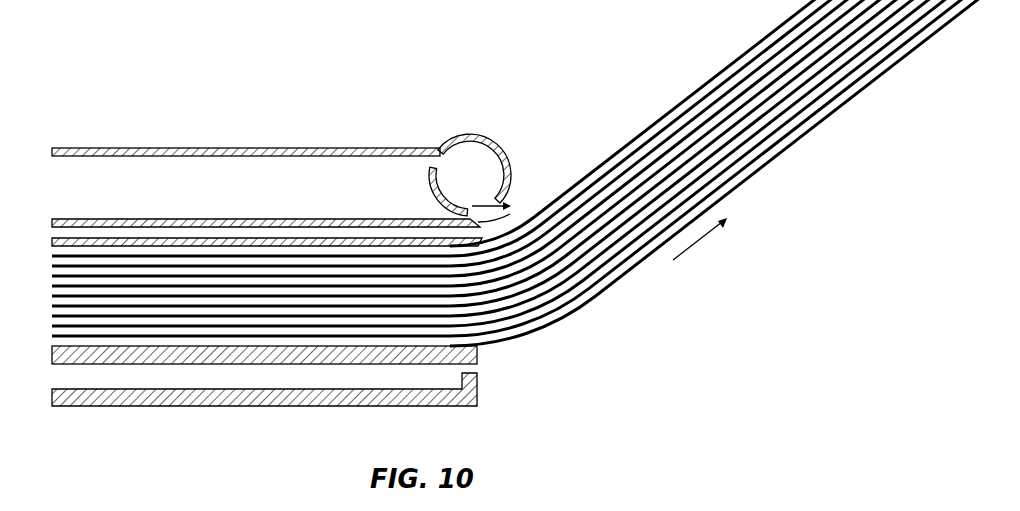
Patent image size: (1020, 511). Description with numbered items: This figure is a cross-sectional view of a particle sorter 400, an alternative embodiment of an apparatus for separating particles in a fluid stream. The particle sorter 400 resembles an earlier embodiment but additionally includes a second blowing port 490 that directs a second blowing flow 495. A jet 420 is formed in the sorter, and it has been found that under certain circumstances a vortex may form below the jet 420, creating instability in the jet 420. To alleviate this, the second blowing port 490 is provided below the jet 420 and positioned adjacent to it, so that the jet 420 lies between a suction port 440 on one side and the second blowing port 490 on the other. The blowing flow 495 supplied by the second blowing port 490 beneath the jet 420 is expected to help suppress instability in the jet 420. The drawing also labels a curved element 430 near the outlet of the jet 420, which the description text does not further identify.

The particle sorter 400 is at (261, 106).
The jet 420 is at (655, 143).
The Coanda cylinder 430 is at (500, 197).
The suction port 440 is at (472, 233).
The second blowing flow 495 is at (480, 364).
The second blowing port 490 is at (480, 378).